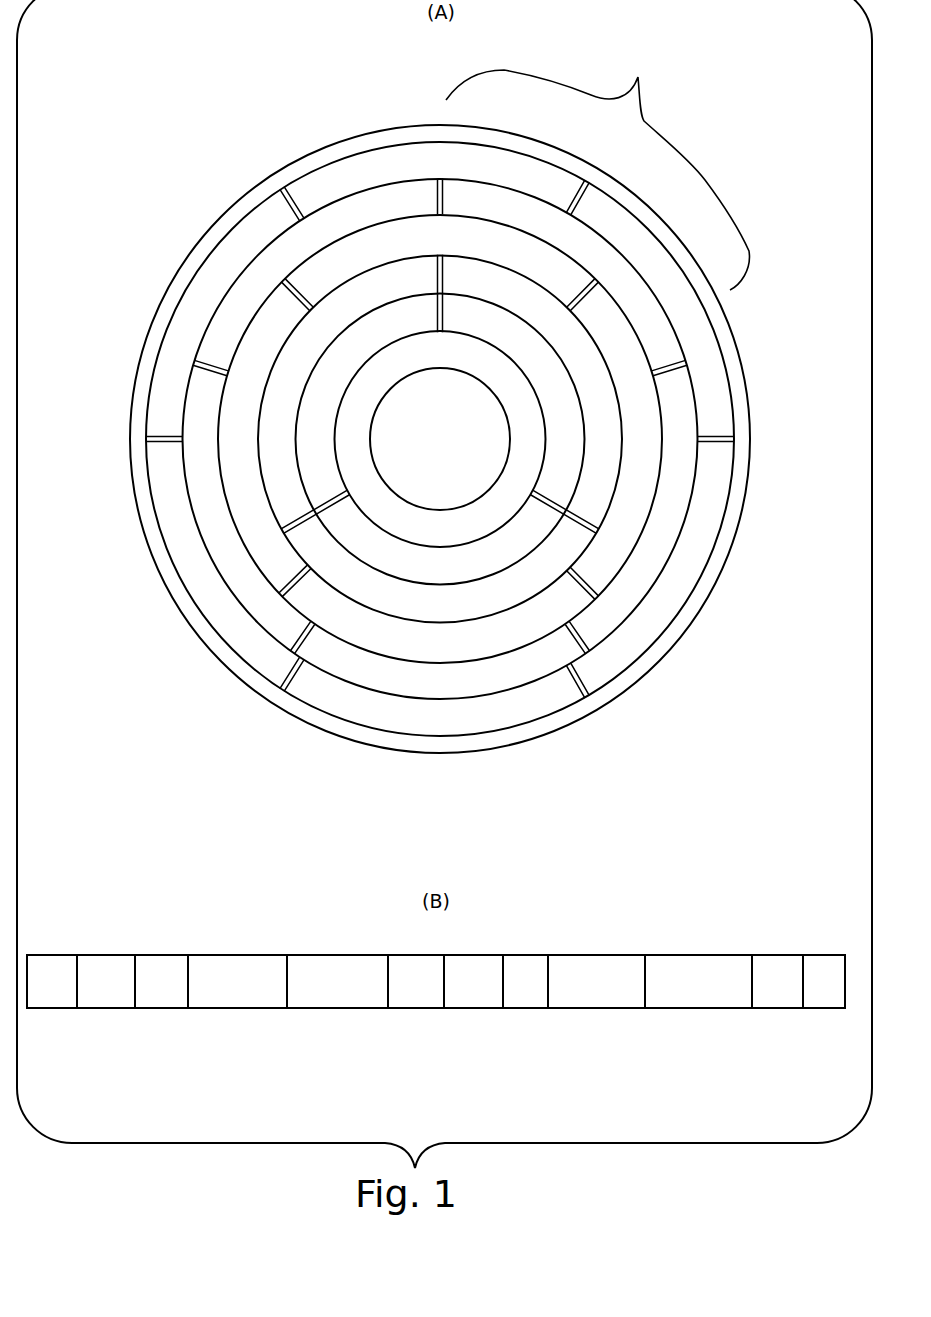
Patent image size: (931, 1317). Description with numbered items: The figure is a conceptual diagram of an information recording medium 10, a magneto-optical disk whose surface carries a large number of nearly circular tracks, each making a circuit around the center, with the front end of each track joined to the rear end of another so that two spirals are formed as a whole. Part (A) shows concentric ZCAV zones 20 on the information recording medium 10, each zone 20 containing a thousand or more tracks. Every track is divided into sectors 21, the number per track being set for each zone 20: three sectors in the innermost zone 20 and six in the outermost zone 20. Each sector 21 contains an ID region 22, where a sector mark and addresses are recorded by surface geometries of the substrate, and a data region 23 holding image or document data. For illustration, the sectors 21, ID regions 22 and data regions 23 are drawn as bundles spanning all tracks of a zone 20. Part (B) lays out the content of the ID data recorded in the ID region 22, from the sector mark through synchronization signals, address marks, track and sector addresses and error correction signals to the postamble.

The information recording medium 10 is at (195, 678).
The zone 20 is at (390, 327).
The sector 21 is at (447, 394).
The ID region 22 is at (583, 634).
The data region 23 is at (412, 687).